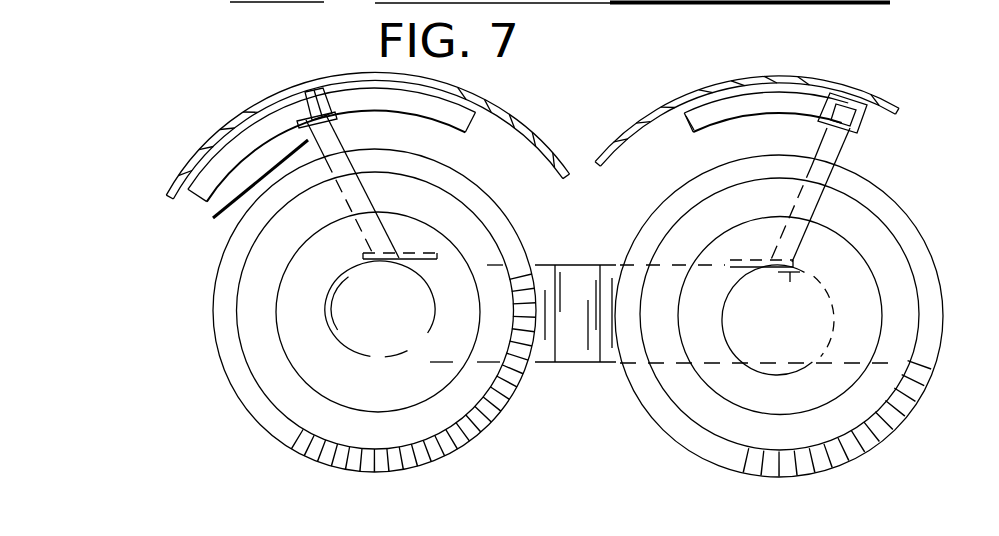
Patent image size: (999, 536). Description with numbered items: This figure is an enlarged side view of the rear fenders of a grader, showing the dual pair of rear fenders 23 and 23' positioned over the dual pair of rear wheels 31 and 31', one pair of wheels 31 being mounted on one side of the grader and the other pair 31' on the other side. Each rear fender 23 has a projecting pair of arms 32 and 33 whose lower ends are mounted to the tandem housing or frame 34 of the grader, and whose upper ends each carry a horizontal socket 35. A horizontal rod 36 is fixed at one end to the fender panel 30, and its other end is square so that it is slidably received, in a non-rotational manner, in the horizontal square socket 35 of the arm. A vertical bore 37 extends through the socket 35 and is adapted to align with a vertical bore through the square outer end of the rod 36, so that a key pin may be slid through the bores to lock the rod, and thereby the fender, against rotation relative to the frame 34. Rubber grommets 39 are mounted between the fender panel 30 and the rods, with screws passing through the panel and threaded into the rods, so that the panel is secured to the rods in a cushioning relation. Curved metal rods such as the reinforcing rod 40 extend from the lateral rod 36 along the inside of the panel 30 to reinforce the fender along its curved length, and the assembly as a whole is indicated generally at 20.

The wheel assembly 20 is at (905, 132).
The left side rear fender 23 is at (615, 183).
The rear fender 23' is at (367, 127).
The fender panel 30 is at (650, 110).
The rear wheels 31 is at (592, 236).
The rear wheels 31' is at (779, 317).
The projecting arm 32 is at (244, 197).
The projecting arm 33 is at (843, 153).
The tandem housing or frame 34 is at (570, 363).
The horizontal socket 35 is at (317, 82).
The horizontal rod 36 is at (838, 102).
The vertical bore 37 is at (873, 88).
The rubber grommet 39 is at (700, 102).
The plate 40 is at (193, 198).